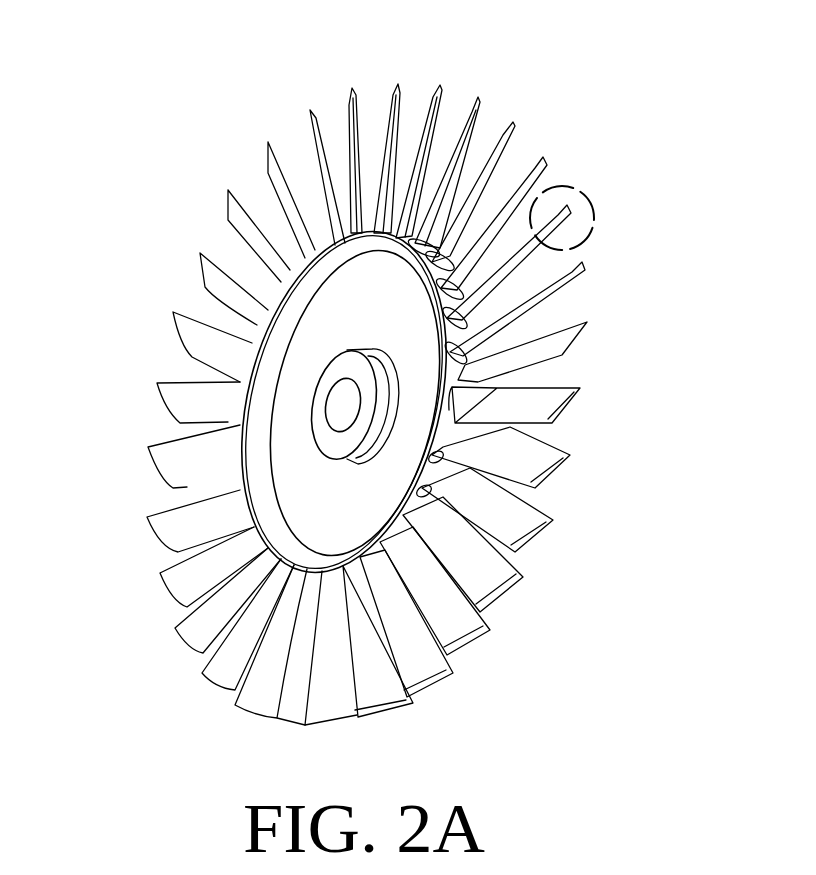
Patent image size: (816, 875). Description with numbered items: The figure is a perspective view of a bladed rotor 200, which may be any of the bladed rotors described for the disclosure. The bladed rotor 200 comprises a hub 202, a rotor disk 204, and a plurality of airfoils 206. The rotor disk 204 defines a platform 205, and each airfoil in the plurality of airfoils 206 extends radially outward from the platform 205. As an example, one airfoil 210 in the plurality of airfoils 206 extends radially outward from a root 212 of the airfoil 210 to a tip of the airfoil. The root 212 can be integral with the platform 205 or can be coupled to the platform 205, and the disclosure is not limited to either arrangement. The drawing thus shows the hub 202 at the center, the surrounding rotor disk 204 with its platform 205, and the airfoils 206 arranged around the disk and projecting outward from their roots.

The bladed rotor 200 is at (178, 76).
The hub 202 is at (360, 374).
The rotor disk 204 is at (293, 465).
The platform 205 is at (401, 240).
The plurality of airfoils 206 is at (344, 142).
The airfoil 210 is at (512, 253).
The root 212 is at (470, 316).